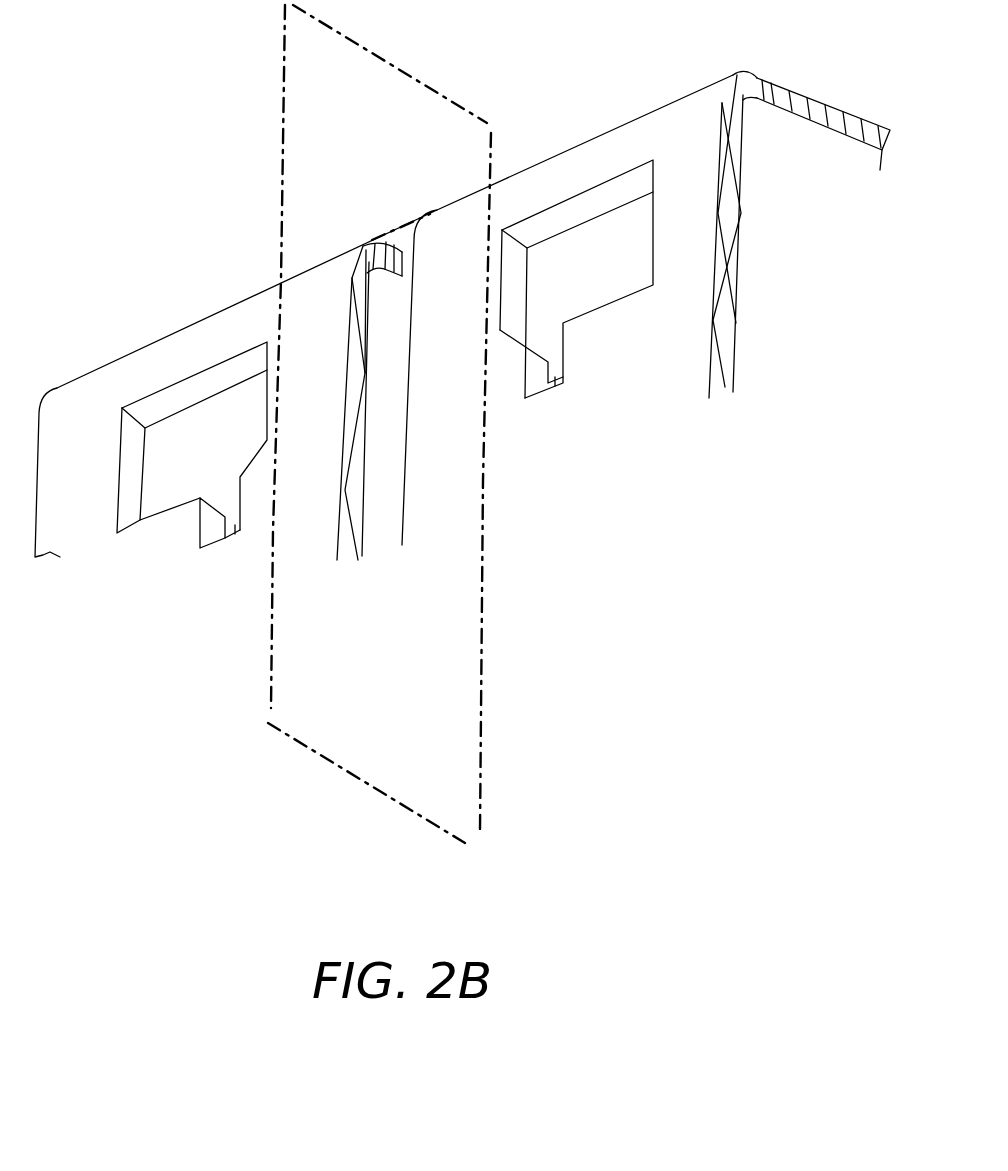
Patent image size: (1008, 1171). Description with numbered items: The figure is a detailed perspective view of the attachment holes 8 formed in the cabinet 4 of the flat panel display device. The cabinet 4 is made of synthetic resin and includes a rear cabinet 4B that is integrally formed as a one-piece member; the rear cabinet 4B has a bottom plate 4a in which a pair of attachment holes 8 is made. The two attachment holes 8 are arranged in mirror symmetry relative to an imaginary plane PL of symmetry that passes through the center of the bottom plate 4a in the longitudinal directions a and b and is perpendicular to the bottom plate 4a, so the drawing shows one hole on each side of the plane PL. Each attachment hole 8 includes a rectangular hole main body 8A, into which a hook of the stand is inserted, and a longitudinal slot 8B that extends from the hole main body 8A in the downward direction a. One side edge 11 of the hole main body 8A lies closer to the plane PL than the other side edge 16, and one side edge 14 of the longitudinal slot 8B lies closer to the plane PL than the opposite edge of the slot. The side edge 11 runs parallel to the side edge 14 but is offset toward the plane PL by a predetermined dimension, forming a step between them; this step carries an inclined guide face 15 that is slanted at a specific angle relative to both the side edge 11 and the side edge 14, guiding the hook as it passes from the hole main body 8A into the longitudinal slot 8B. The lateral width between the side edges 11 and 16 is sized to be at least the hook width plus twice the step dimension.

The cabinet 4 is at (434, 207).
The rear cabinet 4B is at (609, 315).
The bottom plate 4a is at (552, 187).
The attachment hole 8 is at (381, 457).
The hole main body 8A is at (177, 468).
The longitudinal slot 8B is at (238, 532).
The one side edge of the hole main body 11 is at (270, 402).
The one side edge of the longitudinal slot 14 is at (239, 507).
The inclined guide face 15 is at (252, 460).
The other side edge of the hole main body 16 is at (125, 472).
The imaginary plane of symmetry PL is at (481, 740).
The downward longitudinal direction a is at (384, 714).
The upward longitudinal direction b is at (378, 728).